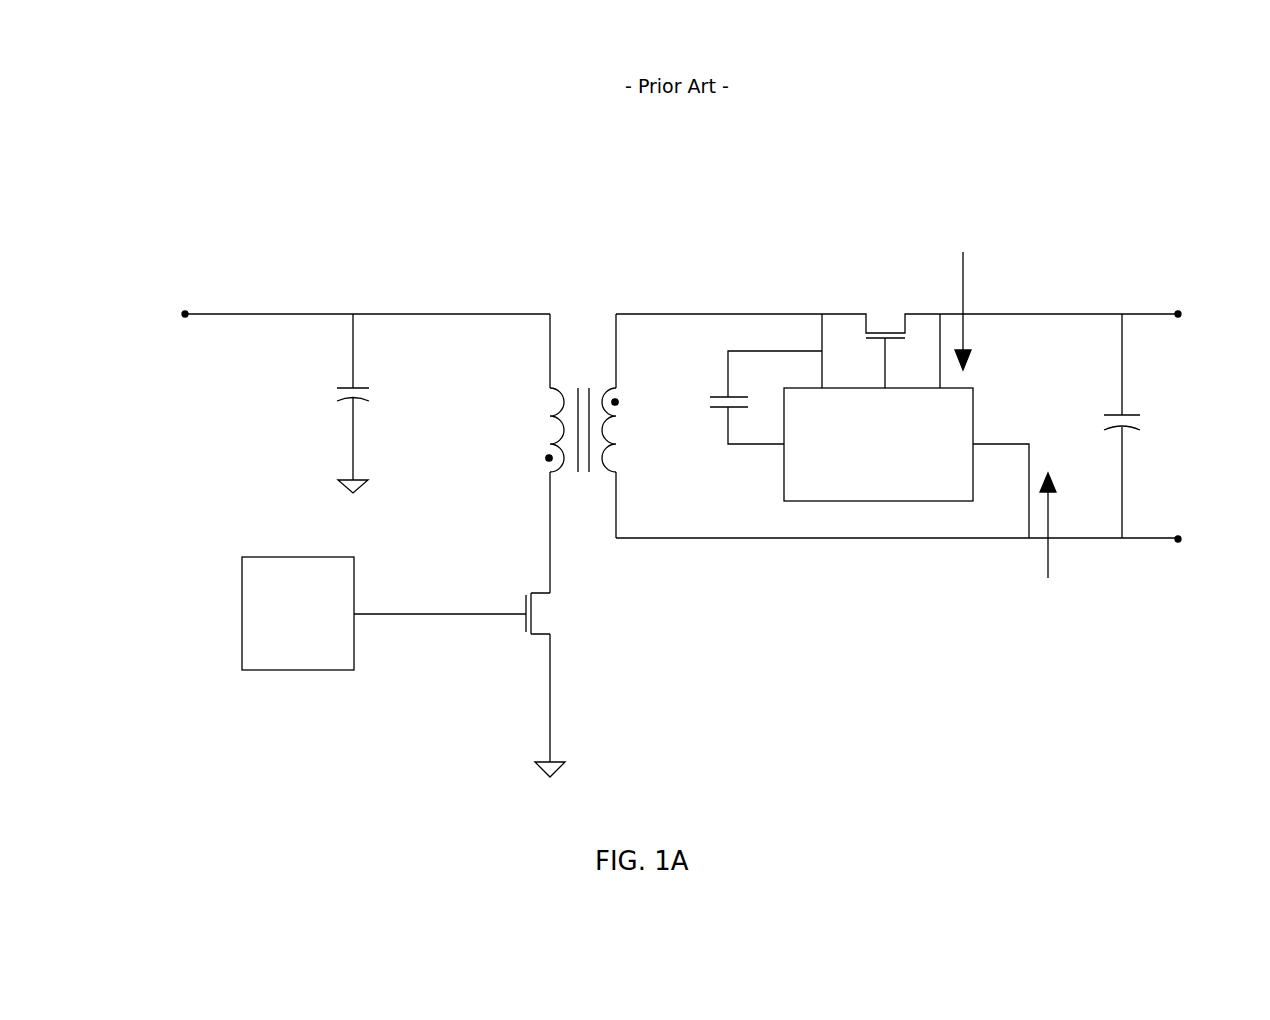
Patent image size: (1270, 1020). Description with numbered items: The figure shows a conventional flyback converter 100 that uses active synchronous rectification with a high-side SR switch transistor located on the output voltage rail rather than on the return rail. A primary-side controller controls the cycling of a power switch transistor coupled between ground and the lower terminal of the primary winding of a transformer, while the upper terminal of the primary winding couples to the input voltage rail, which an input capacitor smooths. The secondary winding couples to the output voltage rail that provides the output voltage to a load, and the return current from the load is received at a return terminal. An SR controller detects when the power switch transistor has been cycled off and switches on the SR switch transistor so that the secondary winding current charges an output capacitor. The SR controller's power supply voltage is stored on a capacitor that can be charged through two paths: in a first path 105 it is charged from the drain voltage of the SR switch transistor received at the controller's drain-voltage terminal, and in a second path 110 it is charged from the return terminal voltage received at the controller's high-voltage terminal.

The conventional flyback converter 100 is at (410, 210).
The first path 105 is at (965, 275).
The second path 110 is at (1050, 560).